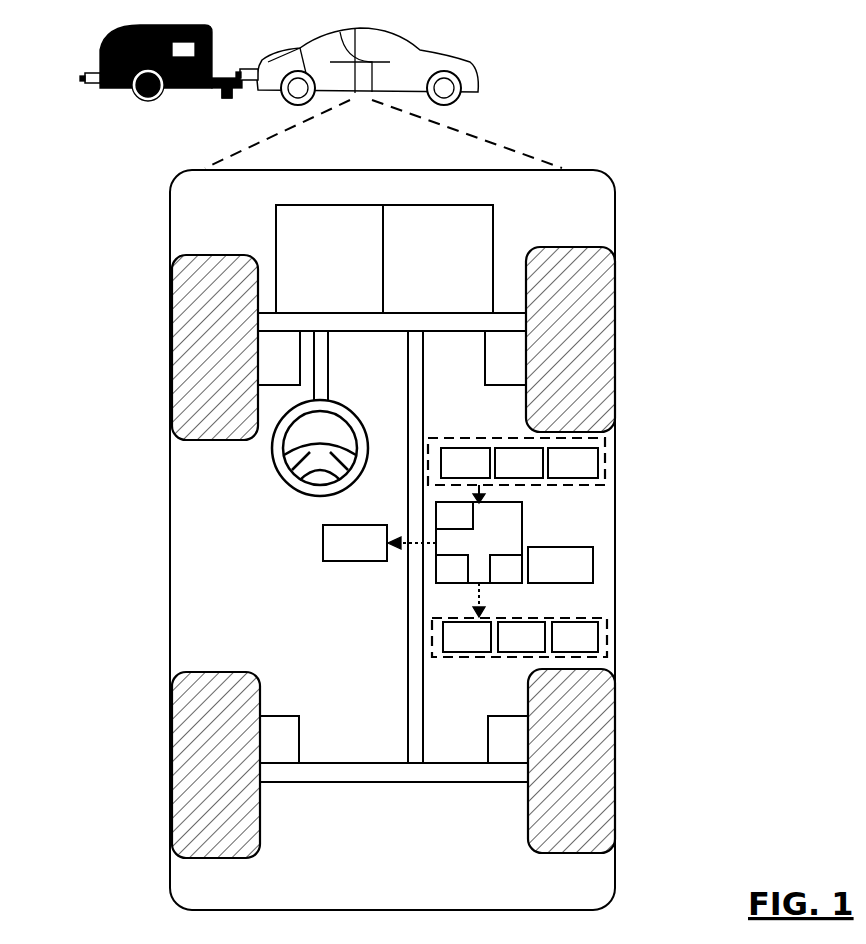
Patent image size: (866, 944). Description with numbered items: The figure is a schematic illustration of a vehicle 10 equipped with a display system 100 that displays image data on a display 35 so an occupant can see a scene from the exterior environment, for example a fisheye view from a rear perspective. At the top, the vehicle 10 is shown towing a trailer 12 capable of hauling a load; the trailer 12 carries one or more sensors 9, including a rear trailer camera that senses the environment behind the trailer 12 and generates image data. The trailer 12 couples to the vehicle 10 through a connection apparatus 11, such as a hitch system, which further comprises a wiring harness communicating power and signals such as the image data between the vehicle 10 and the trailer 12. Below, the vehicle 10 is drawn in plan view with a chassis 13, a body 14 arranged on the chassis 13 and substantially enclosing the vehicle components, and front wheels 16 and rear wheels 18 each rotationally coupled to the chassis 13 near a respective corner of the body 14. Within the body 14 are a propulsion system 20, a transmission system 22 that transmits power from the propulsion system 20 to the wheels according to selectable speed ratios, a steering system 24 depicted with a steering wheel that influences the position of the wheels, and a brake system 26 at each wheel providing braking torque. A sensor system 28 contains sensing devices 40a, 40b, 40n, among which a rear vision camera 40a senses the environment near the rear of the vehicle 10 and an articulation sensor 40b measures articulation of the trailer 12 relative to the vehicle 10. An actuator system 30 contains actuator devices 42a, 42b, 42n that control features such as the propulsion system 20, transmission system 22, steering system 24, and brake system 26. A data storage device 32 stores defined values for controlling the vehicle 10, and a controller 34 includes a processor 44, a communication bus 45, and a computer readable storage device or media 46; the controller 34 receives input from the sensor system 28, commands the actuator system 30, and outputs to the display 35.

The sensors 9 is at (82, 78).
The vehicle 10 is at (480, 95).
The connection apparatus 11 is at (222, 94).
The trailer 12 is at (128, 25).
The chassis 13 is at (408, 700).
The body 14 is at (170, 708).
The front wheels 16 is at (218, 440).
The rear wheels 18 is at (230, 858).
The propulsion system 20 is at (329, 259).
The transmission system 22 is at (438, 259).
The steering system 24 is at (348, 344).
The brake system 26 is at (393, 547).
The sensor system 28 is at (456, 438).
The actuator system 30 is at (476, 658).
The data storage device 32 is at (560, 565).
The controller 34 is at (479, 542).
The display 35 is at (355, 543).
The rear vision camera 40a is at (248, 82).
The articulation sensor 40b is at (519, 463).
The sensing device 40n is at (573, 463).
The actuator device 42a is at (467, 637).
The actuator device 42b is at (521, 637).
The actuator device 42n is at (575, 637).
The processor 44 is at (452, 569).
The communication bus 45 is at (454, 515).
The computer readable storage device or media 46 is at (506, 569).
The display system 100 is at (760, 126).